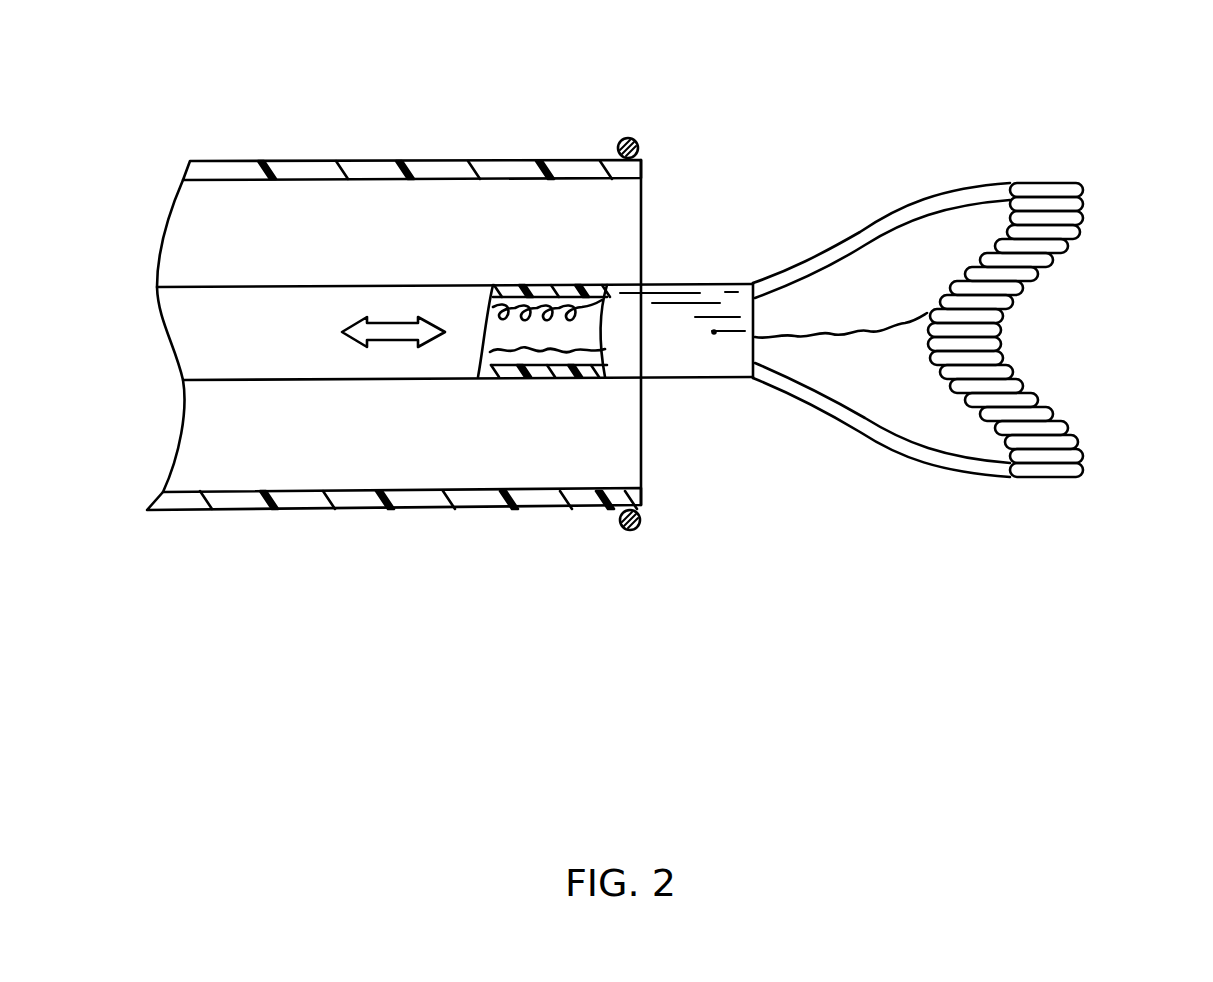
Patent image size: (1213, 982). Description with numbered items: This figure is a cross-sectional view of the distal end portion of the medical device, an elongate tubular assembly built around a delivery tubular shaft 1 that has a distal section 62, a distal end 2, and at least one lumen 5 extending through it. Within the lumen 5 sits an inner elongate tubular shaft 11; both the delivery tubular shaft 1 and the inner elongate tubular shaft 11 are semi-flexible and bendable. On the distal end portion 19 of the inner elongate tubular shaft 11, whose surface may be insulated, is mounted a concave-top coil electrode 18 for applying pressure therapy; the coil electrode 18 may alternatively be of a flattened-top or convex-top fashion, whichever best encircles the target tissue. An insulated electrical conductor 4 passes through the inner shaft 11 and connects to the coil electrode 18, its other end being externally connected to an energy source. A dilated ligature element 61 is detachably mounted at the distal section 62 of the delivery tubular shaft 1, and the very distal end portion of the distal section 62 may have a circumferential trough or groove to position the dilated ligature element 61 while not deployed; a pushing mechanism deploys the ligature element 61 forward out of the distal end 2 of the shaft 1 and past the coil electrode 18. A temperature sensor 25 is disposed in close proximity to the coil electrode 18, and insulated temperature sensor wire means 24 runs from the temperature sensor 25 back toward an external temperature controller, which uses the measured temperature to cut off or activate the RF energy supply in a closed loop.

The delivery tubular shaft 1 is at (352, 157).
The distal end 2 is at (647, 150).
The insulated electrical conductor 4 is at (587, 310).
The lumen 5 is at (253, 457).
The inner elongate tubular shaft 11 is at (688, 383).
The coil electrode 18 is at (1073, 177).
The distal end portion 19 is at (950, 187).
The insulated temperature sensor wire means 24 is at (538, 353).
The temperature sensor 25 is at (1017, 313).
The dilated ligature element 61 is at (643, 532).
The distal section 62 is at (477, 133).